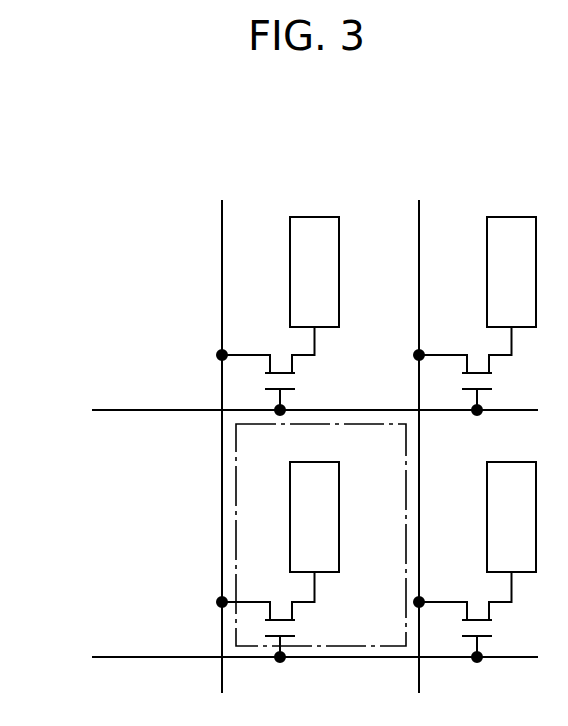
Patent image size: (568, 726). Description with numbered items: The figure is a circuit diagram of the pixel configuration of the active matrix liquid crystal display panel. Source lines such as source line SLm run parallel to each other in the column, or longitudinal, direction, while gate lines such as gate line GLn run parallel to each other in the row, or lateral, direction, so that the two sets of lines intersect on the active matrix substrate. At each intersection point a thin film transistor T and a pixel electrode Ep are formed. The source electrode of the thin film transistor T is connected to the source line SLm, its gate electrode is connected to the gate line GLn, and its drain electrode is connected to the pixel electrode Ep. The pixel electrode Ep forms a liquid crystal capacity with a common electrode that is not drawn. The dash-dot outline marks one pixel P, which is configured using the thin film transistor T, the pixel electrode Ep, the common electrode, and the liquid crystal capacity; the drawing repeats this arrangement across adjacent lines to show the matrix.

The source line SLm is at (225, 430).
The gate line GLn is at (290, 412).
The pixel electrode Ep is at (290, 512).
The thin film transistor T is at (297, 628).
The pixel P is at (387, 646).